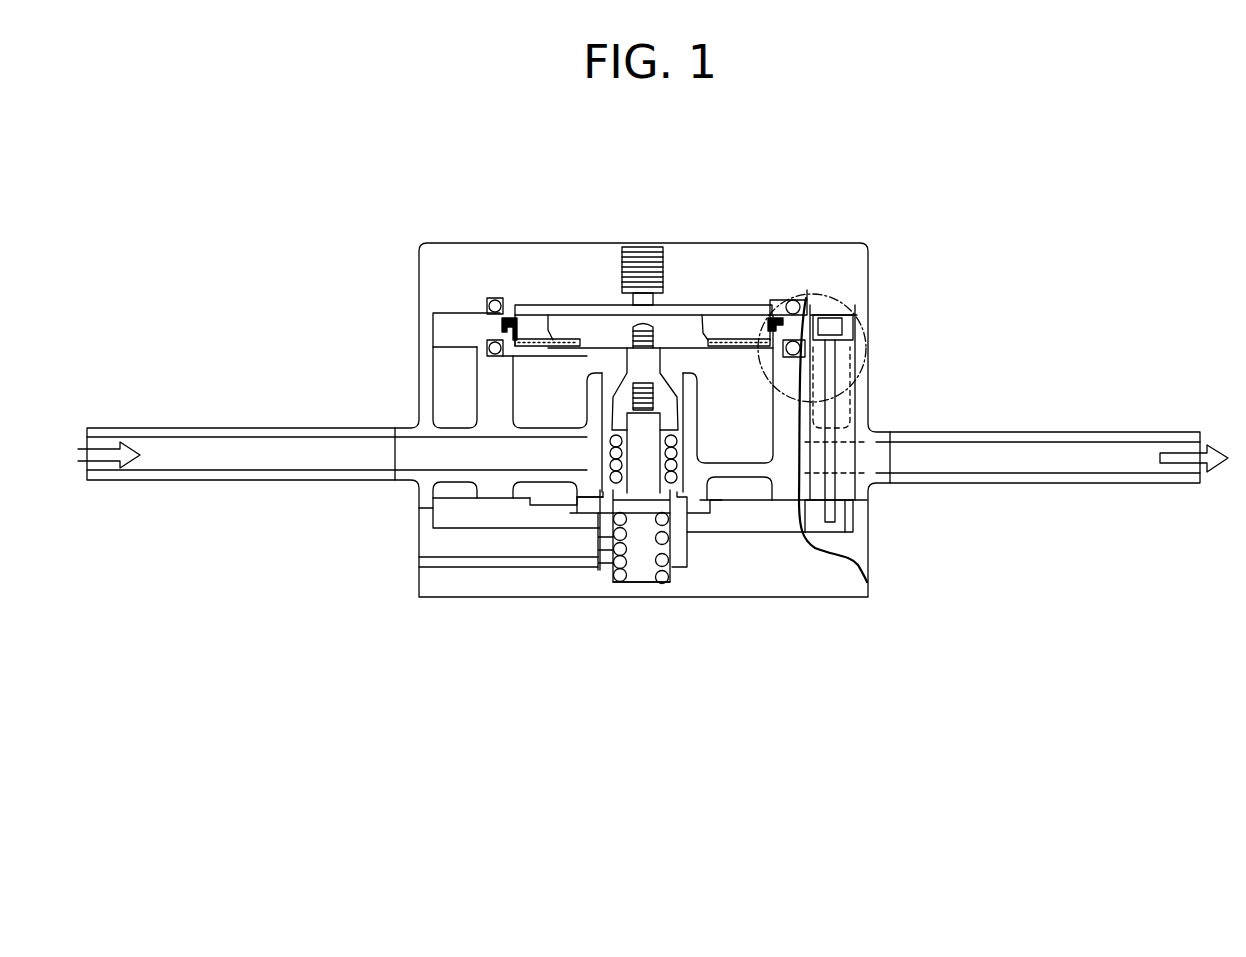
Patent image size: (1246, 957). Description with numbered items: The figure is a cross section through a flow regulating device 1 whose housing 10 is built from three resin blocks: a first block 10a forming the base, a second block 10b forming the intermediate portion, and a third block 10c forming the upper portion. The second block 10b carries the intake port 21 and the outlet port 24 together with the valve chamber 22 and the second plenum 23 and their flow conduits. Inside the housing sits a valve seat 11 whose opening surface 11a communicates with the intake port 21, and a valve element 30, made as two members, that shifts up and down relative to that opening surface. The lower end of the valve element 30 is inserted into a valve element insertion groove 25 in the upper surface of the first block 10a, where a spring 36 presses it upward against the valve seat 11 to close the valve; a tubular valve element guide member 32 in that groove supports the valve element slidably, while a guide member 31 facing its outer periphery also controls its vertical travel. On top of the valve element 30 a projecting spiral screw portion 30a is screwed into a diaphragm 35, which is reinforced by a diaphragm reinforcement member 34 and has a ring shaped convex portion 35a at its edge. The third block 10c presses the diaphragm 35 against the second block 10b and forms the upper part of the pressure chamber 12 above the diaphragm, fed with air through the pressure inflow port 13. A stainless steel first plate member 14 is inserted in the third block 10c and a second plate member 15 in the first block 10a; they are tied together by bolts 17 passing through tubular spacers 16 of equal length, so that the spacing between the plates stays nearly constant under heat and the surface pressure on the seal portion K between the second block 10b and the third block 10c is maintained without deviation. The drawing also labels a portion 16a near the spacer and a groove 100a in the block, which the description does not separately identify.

The flow regulating device 1 is at (918, 148).
The housing 10 is at (680, 422).
The first block 10a is at (848, 577).
The second block 10b is at (862, 423).
The third block 10c is at (432, 273).
The valve seat 11 is at (693, 403).
The opening surface 11a is at (527, 340).
The pressure chamber 12 is at (787, 297).
The pressure inflow port 13 is at (640, 247).
The first plate member 14 is at (447, 331).
The second plate member 15 is at (460, 516).
The spacer 16 is at (893, 448).
The valve pin seat 16a is at (866, 490).
The bolt 17 is at (833, 315).
The intake port 21 is at (195, 455).
The valve chamber 22 is at (603, 455).
The second plenum 23 is at (547, 393).
The outlet port 24 is at (1083, 460).
The valve element insertion groove 25 is at (614, 580).
The valve element 30 is at (678, 395).
The projecting spiral screw portion 30a is at (657, 343).
The guide member 31 is at (690, 520).
The valve element guide member 32 is at (681, 560).
The diaphragm reinforcement member 34 is at (770, 315).
The diaphragm 35 is at (603, 328).
The ring shaped convex portion 35a is at (510, 337).
The spring 36 is at (655, 560).
The chamber 100a is at (508, 525).
The seal portion K is at (866, 398).